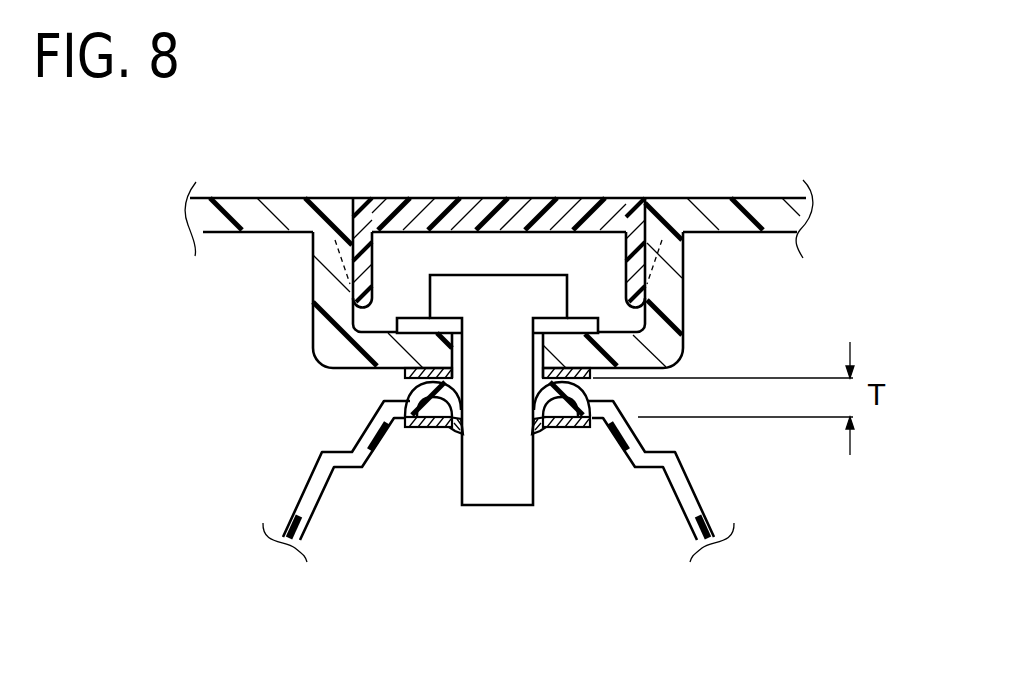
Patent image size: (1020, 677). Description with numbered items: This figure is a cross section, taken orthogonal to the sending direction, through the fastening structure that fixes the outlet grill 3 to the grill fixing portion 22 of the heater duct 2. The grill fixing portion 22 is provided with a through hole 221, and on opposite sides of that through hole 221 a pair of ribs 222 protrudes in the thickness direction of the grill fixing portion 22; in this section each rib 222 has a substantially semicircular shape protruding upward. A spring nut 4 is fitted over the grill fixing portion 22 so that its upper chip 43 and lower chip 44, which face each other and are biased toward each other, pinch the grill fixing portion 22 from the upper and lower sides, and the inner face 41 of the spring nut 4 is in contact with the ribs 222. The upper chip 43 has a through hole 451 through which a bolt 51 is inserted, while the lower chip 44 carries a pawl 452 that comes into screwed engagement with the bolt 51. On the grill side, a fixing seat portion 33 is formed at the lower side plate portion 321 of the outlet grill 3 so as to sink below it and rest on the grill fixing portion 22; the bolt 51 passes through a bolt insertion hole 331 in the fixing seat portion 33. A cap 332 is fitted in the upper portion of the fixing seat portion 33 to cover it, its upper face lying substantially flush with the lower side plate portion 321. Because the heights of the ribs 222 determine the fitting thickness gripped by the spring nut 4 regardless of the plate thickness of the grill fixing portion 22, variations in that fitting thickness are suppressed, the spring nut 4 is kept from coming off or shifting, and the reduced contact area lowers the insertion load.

The heater duct 2 is at (708, 518).
The grill fixing portion 22 is at (603, 420).
The through hole 221 is at (522, 427).
The rib 222 is at (407, 385).
The outlet grill 3 is at (248, 218).
The fixing seat portion 33 is at (378, 338).
The bolt insertion hole 331 is at (540, 350).
The cap 332 is at (522, 219).
The lower side plate portion 321 is at (716, 220).
The spring nut 4 is at (413, 427).
The inner face 41 is at (573, 383).
The upper chip 43 is at (413, 370).
The lower chip 44 is at (440, 427).
The through hole 451 is at (456, 376).
The pawl 452 is at (473, 427).
The bolt 51 is at (484, 297).